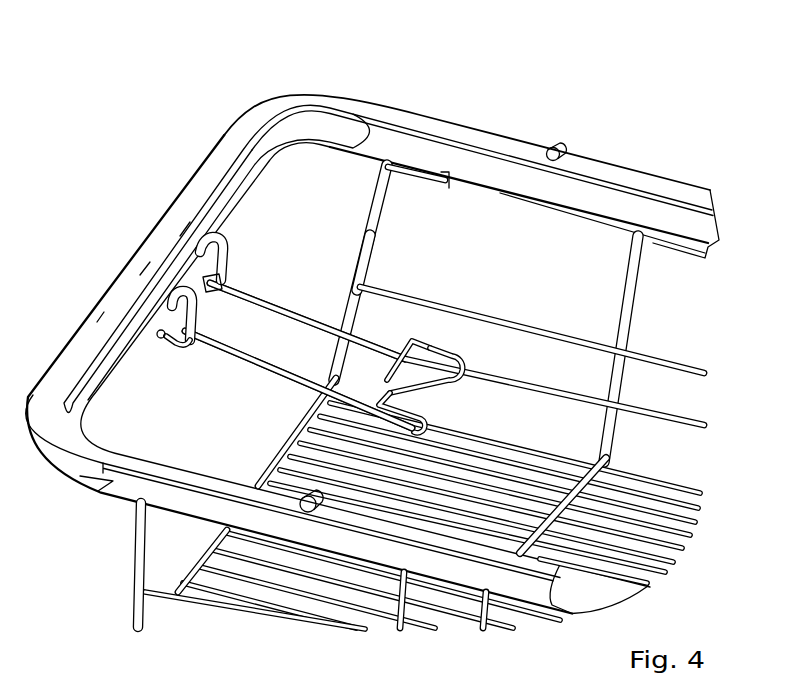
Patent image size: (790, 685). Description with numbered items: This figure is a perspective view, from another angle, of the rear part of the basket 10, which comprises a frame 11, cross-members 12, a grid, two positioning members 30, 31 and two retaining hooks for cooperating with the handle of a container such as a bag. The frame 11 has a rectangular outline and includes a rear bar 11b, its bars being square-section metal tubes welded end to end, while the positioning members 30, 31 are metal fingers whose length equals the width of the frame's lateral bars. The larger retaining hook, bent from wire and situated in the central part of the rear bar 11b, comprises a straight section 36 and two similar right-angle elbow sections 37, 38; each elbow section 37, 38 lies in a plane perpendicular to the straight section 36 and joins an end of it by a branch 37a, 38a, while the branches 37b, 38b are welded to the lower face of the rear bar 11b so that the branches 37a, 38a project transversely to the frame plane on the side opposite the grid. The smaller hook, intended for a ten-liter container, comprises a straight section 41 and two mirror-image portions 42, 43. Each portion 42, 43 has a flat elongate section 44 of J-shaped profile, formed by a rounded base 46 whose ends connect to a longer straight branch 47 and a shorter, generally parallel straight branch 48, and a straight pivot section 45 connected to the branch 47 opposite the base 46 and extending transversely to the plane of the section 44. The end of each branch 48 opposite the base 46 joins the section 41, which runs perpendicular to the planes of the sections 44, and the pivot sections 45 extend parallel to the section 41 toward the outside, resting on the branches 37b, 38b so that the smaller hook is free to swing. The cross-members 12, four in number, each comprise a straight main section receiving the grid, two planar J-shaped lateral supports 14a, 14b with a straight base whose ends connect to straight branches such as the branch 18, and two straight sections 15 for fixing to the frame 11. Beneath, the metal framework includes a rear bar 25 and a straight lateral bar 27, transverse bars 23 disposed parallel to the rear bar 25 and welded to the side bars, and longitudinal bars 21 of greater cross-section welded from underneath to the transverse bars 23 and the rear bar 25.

The basket 10 is at (648, 45).
The frame 11 is at (537, 128).
The rear bar 11b is at (136, 270).
The cross-member 12 is at (610, 446).
The lateral support 14a is at (360, 206).
The lateral support 14b is at (135, 582).
The straight section 15 is at (427, 183).
The straight branch 18 is at (372, 262).
The longitudinal bar 21 is at (521, 385).
The transverse bar 23 is at (586, 456).
The rear bar 25 is at (265, 470).
The lateral bar 27 is at (510, 325).
The positioning member 30 is at (312, 511).
The positioning member 31 is at (566, 144).
The straight section 36 is at (182, 236).
The right-angle elbow section 37 is at (183, 358).
The branch 37a is at (193, 320).
The branch 37b is at (156, 340).
The right-angle elbow section 38 is at (250, 263).
The branch 38a is at (222, 262).
The branch 38b is at (216, 290).
The straight section 41 is at (440, 376).
The portion 42 is at (258, 369).
The portion 43 is at (291, 309).
The elongate section 44 is at (227, 348).
The pivot section 45 is at (98, 318).
The rounded base 46 is at (452, 380).
The straight branch 47 is at (323, 322).
The straight branch 48 is at (418, 347).